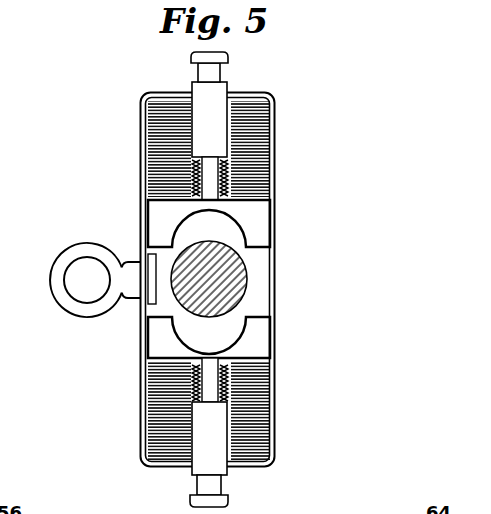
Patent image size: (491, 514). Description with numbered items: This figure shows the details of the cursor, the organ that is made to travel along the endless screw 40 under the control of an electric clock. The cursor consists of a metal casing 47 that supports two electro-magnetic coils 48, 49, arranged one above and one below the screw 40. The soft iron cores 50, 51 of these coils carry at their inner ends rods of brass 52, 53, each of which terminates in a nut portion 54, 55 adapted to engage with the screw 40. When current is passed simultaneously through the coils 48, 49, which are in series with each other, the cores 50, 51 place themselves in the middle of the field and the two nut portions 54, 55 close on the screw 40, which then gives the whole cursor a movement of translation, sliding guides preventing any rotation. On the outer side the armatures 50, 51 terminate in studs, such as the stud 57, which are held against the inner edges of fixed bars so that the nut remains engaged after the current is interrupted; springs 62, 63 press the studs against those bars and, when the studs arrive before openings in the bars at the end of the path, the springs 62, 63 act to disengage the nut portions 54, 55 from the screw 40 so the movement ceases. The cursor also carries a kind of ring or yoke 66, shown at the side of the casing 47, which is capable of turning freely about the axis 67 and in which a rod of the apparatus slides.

The endless screw 40 is at (193, 300).
The metal casing 47 is at (273, 125).
The electro-magnetic coil 48 is at (152, 123).
The electro-magnetic coil 49 is at (162, 441).
The soft iron core 50 is at (212, 97).
The soft iron core 51 is at (210, 437).
The brass rod 52 is at (264, 168).
The brass rod 53 is at (235, 383).
The nut portion 54 is at (253, 227).
The nut portion 55 is at (257, 337).
The stud 57 is at (228, 500).
The spring 62 is at (152, 178).
The spring 63 is at (172, 392).
The ring or yoke 66 is at (67, 300).
The axis 67 is at (131, 285).